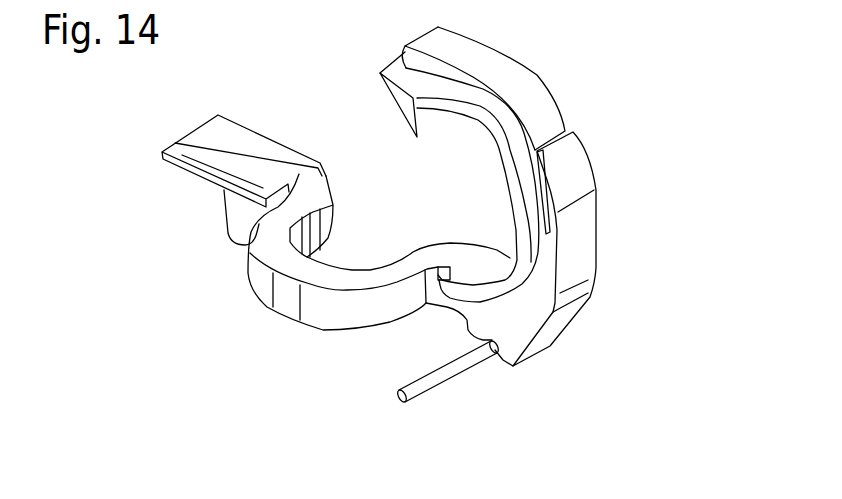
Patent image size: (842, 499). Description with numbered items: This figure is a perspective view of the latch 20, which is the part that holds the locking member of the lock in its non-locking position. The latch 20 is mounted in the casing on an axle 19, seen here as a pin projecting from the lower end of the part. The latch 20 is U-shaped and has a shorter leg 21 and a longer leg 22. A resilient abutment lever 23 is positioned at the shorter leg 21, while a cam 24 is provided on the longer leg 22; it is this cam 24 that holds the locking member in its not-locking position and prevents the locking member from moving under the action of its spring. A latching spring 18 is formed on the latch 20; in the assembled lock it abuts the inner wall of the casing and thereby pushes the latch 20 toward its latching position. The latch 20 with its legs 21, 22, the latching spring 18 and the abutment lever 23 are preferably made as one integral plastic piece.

The latching spring 18 is at (568, 168).
The axle 19 is at (447, 368).
The latch 20 is at (262, 323).
The shorter leg 21 is at (470, 65).
The longer leg 22 is at (210, 138).
The resilient abutment lever 23 is at (403, 107).
The cam 24 is at (240, 218).